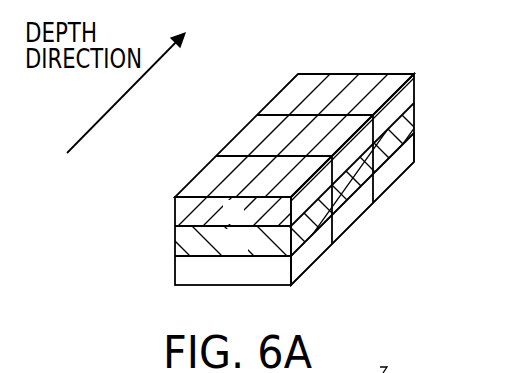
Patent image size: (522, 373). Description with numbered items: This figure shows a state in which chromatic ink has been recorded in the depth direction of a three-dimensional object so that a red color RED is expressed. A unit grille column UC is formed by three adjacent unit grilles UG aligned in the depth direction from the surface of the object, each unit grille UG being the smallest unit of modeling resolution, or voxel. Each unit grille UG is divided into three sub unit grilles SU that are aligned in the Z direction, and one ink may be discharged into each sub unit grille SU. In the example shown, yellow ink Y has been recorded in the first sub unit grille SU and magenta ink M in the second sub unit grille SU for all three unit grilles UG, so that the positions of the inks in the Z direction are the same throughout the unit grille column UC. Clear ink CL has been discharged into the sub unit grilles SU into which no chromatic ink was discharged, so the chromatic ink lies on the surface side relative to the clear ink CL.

The red color RED is at (294, 148).
The unit grille column UC is at (282, 58).
The unit grille UG is at (102, 198).
The sub unit grille SU is at (174, 208).
The yellow ink Y is at (242, 211).
The magenta ink M is at (289, 186).
The clear ink CL is at (457, 226).